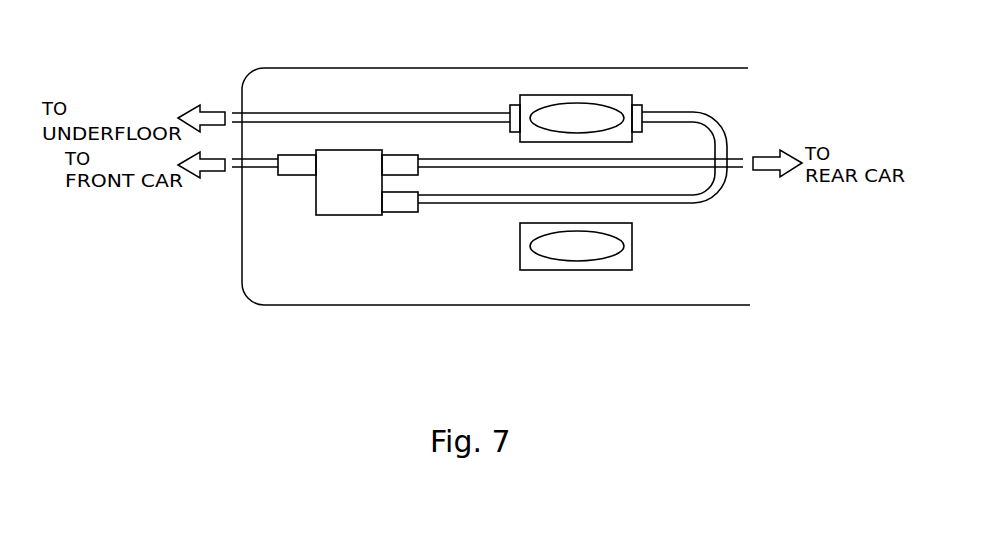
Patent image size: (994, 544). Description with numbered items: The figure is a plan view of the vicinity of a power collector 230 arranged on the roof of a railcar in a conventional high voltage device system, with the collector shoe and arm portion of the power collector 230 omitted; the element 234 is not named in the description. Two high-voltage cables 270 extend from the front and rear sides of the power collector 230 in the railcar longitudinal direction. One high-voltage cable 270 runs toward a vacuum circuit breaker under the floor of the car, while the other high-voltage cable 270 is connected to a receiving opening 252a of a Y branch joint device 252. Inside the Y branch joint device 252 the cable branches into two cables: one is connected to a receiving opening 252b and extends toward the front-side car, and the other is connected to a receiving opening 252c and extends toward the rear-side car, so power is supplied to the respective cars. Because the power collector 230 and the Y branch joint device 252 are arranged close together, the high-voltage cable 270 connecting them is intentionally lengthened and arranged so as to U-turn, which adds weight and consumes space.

The high-voltage cable 270 is at (298, 113).
The Y branch joint device 252 is at (345, 200).
The receiving opening 252a is at (402, 203).
The receiving opening 252b is at (298, 165).
The receiving opening 252c is at (393, 160).
The power collector 230 is at (540, 95).
The antenna element 234 is at (578, 103).